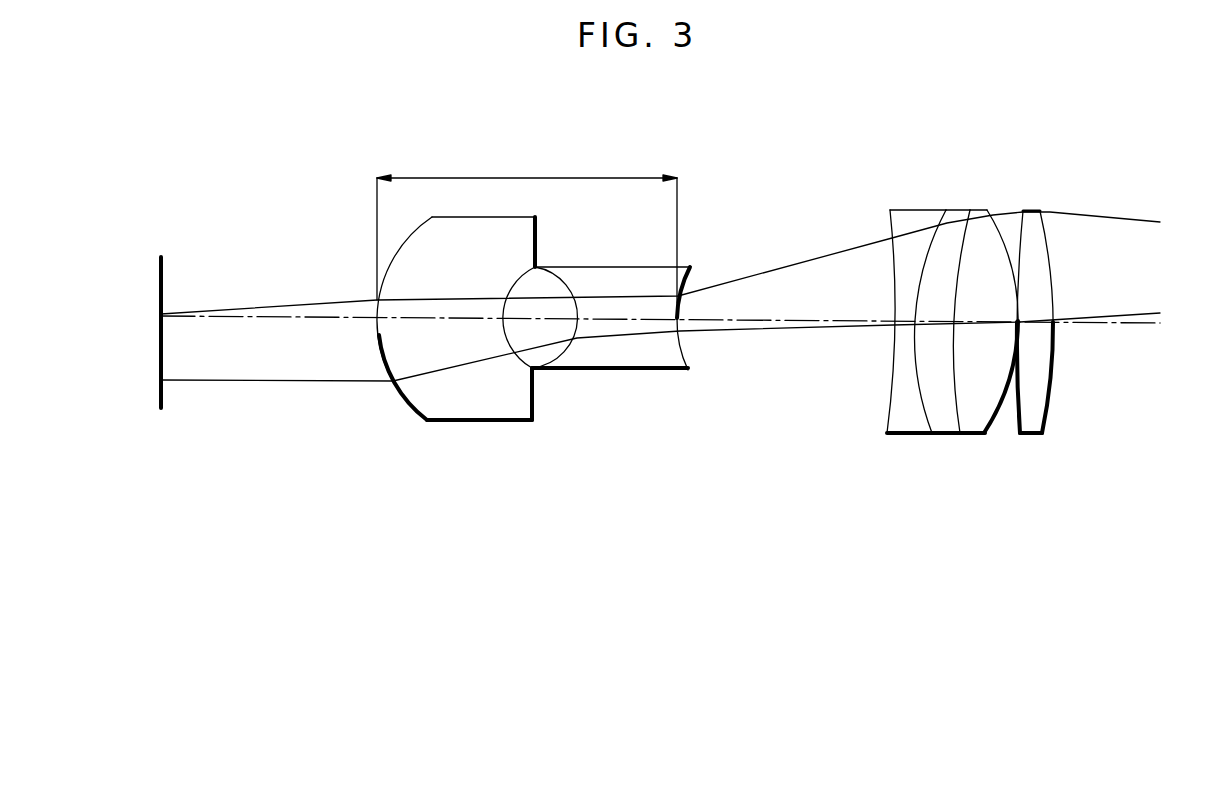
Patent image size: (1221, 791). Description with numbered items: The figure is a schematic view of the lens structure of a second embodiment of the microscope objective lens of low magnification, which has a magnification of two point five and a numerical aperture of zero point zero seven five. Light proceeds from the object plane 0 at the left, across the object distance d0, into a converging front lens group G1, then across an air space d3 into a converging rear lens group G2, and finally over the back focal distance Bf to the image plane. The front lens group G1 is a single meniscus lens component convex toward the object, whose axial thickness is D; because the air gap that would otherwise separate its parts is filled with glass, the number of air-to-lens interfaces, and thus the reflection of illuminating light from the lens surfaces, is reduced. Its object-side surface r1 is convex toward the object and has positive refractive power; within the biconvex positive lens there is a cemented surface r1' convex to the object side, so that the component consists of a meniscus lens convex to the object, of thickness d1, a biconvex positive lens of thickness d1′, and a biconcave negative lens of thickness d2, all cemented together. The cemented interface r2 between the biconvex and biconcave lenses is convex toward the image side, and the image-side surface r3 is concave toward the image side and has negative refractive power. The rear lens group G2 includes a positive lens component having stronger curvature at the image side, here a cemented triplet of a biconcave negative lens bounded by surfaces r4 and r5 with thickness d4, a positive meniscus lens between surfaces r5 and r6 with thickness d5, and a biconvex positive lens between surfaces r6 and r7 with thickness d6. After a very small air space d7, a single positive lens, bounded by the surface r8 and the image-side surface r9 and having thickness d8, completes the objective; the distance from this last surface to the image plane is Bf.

The object plane 0 is at (162, 276).
The object distance d0 is at (293, 317).
The axial thickness of meniscus lens d1 is at (449, 318).
The axial thickness of biconvex positive lens d1′ is at (538, 317).
The axial thickness of biconcave negative lens d2 is at (615, 320).
The air space between lens groups d3 is at (785, 320).
The axial thickness of biconcave negative lens d4 is at (900, 322).
The axial thickness of positive meniscus lens d5 is at (934, 322).
The axial thickness of biconvex positive lens d6 is at (979, 322).
The air space d7 is at (1022, 323).
The axial thickness of single positive lens d8 is at (1038, 323).
The back focal distance Bf is at (1118, 318).
The axial thickness of meniscus lens component D is at (527, 230).
The front lens group G1 is at (685, 120).
The rear lens group G2 is at (1067, 125).
The object-side lens surface r1 is at (456, 348).
The cemented lens surface r1' is at (534, 348).
The cemented interface r2 is at (565, 358).
The image-side lens surface r3 is at (688, 370).
The object-side surface of rear group r4 is at (887, 420).
The cemented surface r5 is at (932, 425).
The cemented surface r6 is at (960, 430).
The image-side surface of cemented triplet r7 is at (990, 425).
The object-side surface of single positive lens r8 is at (1022, 420).
The last lens surface r9 is at (1045, 420).